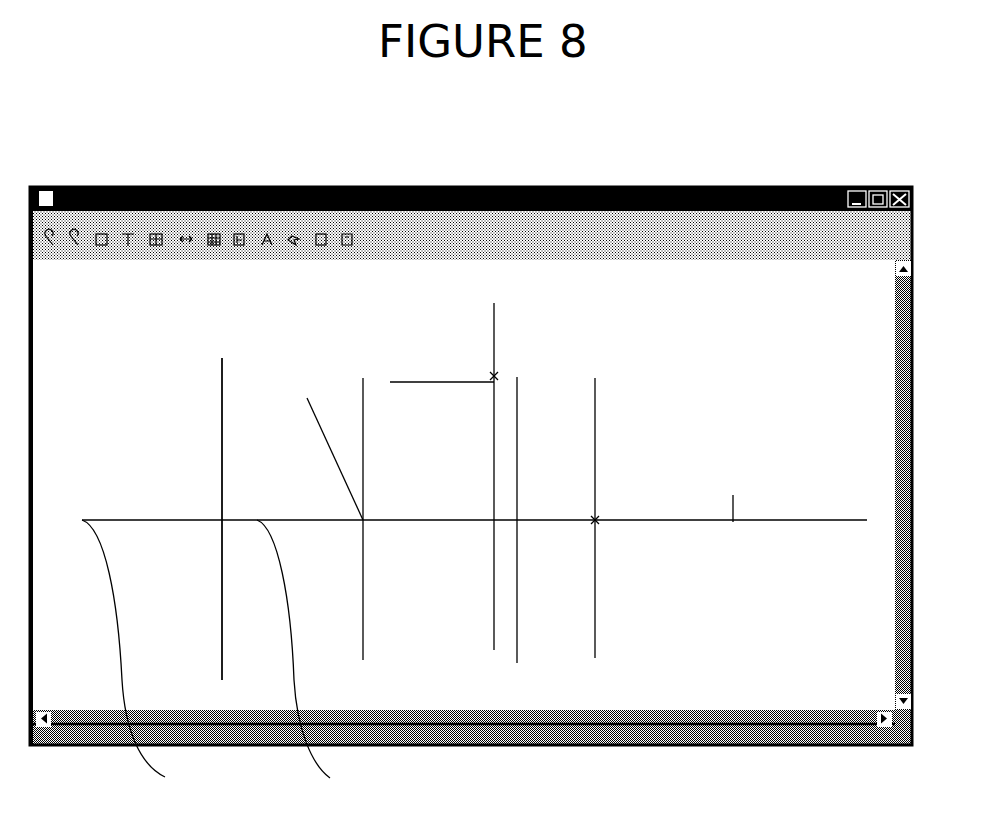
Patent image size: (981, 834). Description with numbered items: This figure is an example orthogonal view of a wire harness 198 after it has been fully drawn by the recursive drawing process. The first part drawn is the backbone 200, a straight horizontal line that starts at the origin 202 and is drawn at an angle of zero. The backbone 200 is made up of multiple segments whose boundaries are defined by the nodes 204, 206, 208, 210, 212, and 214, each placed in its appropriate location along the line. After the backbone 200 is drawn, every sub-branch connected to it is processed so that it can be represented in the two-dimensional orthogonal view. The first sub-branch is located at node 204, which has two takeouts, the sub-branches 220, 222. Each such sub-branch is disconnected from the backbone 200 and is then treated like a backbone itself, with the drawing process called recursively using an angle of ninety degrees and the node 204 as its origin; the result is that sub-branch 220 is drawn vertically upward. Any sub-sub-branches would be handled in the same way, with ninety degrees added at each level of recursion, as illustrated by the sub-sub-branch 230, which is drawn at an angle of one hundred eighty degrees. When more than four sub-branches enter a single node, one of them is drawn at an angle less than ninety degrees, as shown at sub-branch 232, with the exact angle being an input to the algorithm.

The wire harness 198 is at (666, 372).
The backbone 200 is at (315, 658).
The origin 202 is at (145, 654).
The node 204 is at (222, 525).
The node 206 is at (363, 525).
The node 208 is at (494, 524).
The node 210 is at (517, 523).
The node 212 is at (596, 523).
The node 214 is at (733, 522).
The sub-branch 220 is at (222, 415).
The sub-branch 222 is at (222, 585).
The sub-sub-branch 230 is at (452, 383).
The sub-branch drawn at angle less than 90 degrees 232 is at (326, 436).